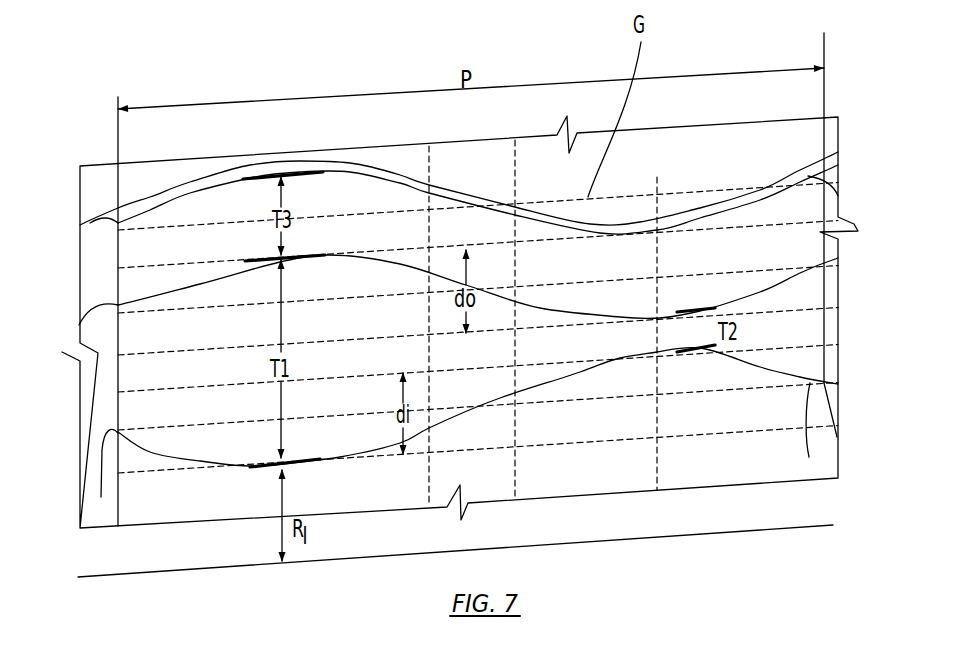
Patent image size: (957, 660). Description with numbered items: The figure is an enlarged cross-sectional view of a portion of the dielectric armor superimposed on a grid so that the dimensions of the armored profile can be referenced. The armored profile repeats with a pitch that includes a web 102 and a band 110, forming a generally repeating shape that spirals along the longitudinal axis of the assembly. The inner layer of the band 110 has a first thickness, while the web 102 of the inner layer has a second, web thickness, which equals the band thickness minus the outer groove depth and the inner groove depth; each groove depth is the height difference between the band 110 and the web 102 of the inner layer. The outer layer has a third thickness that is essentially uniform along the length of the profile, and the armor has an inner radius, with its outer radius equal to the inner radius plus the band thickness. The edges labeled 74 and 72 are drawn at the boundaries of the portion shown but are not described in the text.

The band 110 is at (213, 378).
The web 102 is at (628, 334).
The outer boundary 74 is at (79, 276).
The inner boundary 72 is at (107, 398).